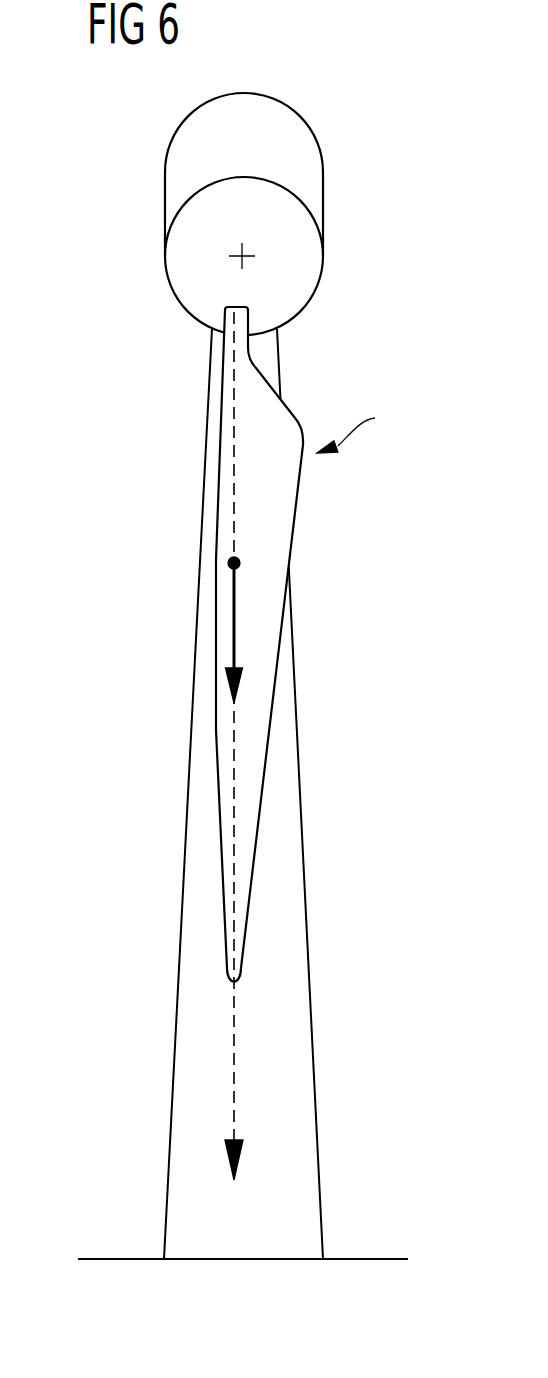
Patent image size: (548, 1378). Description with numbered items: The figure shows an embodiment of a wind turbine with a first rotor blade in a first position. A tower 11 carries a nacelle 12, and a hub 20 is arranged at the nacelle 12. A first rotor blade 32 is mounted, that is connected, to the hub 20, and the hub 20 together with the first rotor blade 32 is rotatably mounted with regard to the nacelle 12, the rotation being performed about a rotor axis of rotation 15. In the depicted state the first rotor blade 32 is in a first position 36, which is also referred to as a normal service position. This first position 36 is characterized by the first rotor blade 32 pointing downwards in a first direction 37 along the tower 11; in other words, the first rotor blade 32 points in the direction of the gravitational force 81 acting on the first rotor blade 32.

The tower 11 is at (188, 1137).
The nacelle 12 is at (298, 177).
The hub 20 is at (303, 278).
The rotor axis of rotation 15 is at (240, 256).
The first rotor blade 32 is at (280, 497).
The first position 36 is at (362, 426).
The first direction 37 is at (234, 1040).
The gravitational force 81 is at (235, 613).